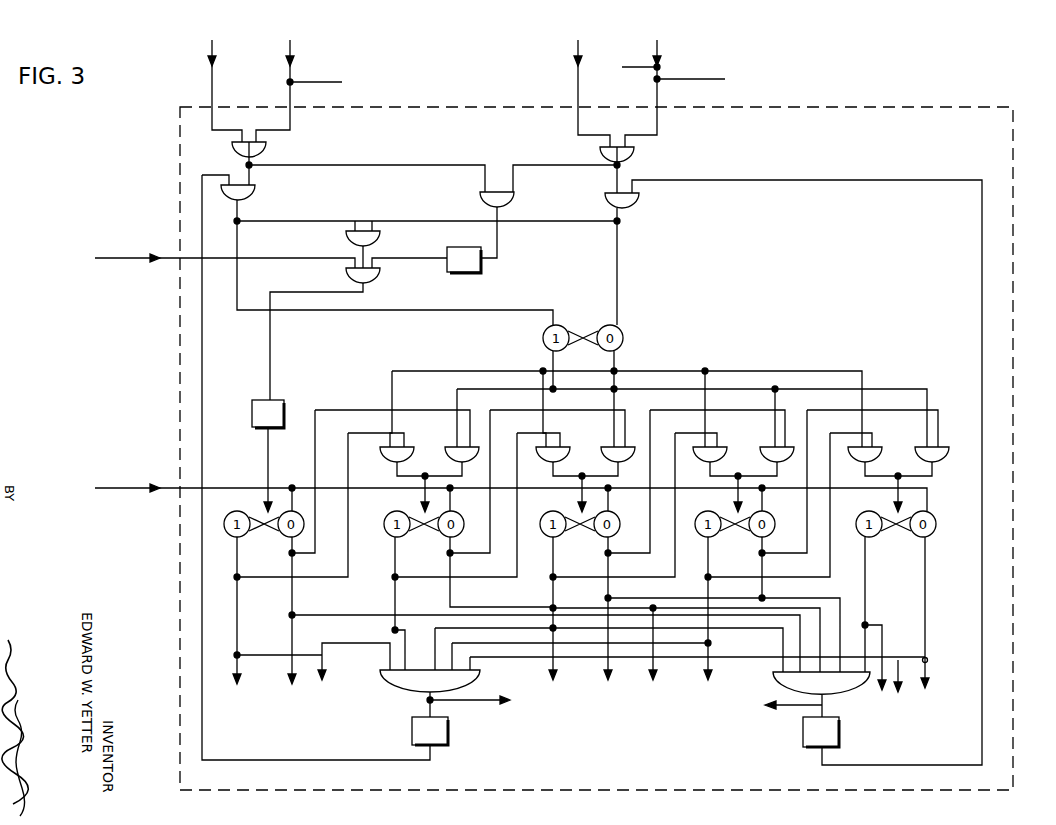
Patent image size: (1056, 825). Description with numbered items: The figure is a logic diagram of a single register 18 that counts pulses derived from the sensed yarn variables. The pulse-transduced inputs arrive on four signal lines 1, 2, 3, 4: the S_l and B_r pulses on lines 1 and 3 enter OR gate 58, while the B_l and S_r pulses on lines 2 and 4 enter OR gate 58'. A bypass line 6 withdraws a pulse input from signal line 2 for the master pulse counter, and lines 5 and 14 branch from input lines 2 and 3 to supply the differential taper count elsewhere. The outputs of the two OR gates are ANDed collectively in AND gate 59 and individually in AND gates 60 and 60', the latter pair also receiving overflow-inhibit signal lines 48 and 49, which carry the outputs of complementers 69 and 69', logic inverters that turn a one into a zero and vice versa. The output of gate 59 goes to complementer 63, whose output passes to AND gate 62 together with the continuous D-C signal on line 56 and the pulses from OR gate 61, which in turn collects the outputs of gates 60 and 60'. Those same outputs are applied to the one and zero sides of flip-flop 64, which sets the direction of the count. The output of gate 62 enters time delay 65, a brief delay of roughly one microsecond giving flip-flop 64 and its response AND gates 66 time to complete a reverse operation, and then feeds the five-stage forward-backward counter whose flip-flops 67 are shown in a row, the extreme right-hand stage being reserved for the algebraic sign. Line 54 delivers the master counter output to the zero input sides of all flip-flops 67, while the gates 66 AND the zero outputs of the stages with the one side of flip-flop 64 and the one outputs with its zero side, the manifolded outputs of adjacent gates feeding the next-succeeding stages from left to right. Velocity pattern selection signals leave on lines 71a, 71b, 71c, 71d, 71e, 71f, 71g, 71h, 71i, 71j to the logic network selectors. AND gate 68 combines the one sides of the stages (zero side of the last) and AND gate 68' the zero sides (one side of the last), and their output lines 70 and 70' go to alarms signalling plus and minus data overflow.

The signal line 1 is at (212, 79).
The signal line 2 is at (657, 68).
The signal line 3 is at (290, 78).
The signal line 4 is at (578, 66).
The line 5 is at (626, 67).
The bypass line 6 is at (704, 78).
The line 14 is at (330, 84).
The register 18 is at (770, 108).
The overflow-inhibit signal line 48 is at (202, 356).
The overflow-inhibit signal line 49 is at (984, 345).
The line 54 is at (152, 486).
The line 56 is at (152, 258).
The OR gate 58 is at (278, 163).
The OR gate 58' is at (636, 170).
The AND gate 59 is at (514, 198).
The AND gate 60 is at (377, 250).
The AND gate 60' is at (641, 257).
The OR gate 61 is at (380, 236).
The AND gate 62 is at (380, 278).
The complementer 63 is at (464, 260).
The flip-flop 64 is at (639, 339).
The time delay 65 is at (268, 456).
The AND gates 66 is at (950, 460).
The flip-flops 67 is at (948, 548).
The AND gate 68 is at (430, 693).
The AND gate 68' is at (823, 694).
The complementer 69 is at (430, 731).
The complementer 69' is at (821, 732).
The line 70 is at (468, 711).
The line 70' is at (789, 719).
The line 71a is at (238, 684).
The line 71b is at (290, 684).
The line 71c is at (322, 680).
The line 71d is at (567, 684).
The line 71e is at (622, 684).
The line 71f is at (667, 684).
The line 71g is at (712, 682).
The line 71h is at (884, 692).
The line 71i is at (903, 696).
The line 71j is at (926, 672).